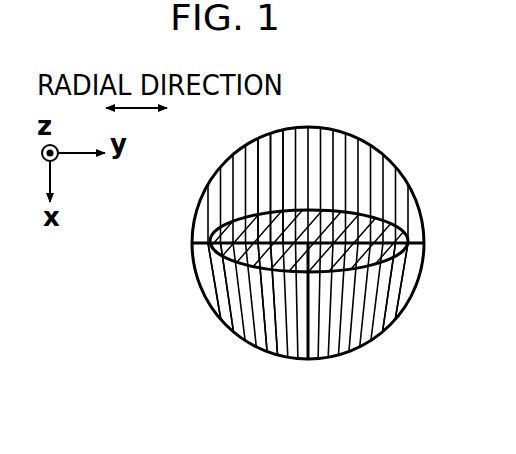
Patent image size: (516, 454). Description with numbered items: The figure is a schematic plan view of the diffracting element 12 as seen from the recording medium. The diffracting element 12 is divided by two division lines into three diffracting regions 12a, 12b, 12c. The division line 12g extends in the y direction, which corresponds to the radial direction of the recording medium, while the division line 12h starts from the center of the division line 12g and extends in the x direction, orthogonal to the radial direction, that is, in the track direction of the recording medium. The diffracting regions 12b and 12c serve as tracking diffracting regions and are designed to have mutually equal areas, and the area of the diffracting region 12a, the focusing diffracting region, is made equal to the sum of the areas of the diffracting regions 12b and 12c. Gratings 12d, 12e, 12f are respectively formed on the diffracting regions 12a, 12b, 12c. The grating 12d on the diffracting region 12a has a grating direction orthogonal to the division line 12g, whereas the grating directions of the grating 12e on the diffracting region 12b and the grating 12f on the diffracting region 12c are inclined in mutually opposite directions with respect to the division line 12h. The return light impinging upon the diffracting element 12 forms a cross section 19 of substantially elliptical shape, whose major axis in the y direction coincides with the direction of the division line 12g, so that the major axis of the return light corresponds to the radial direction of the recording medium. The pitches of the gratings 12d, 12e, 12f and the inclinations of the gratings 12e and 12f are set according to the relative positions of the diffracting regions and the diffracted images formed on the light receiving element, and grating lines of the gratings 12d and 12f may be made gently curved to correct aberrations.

The diffracting element 12 is at (441, 177).
The diffracting region 12a is at (348, 148).
The diffracting region 12b is at (353, 308).
The diffracting region 12c is at (222, 287).
The grating 12d is at (265, 140).
The grating 12e is at (404, 290).
The grating 12f is at (281, 346).
The division line 12g is at (424, 243).
The division line 12h is at (308, 362).
The cross section 19 is at (222, 223).